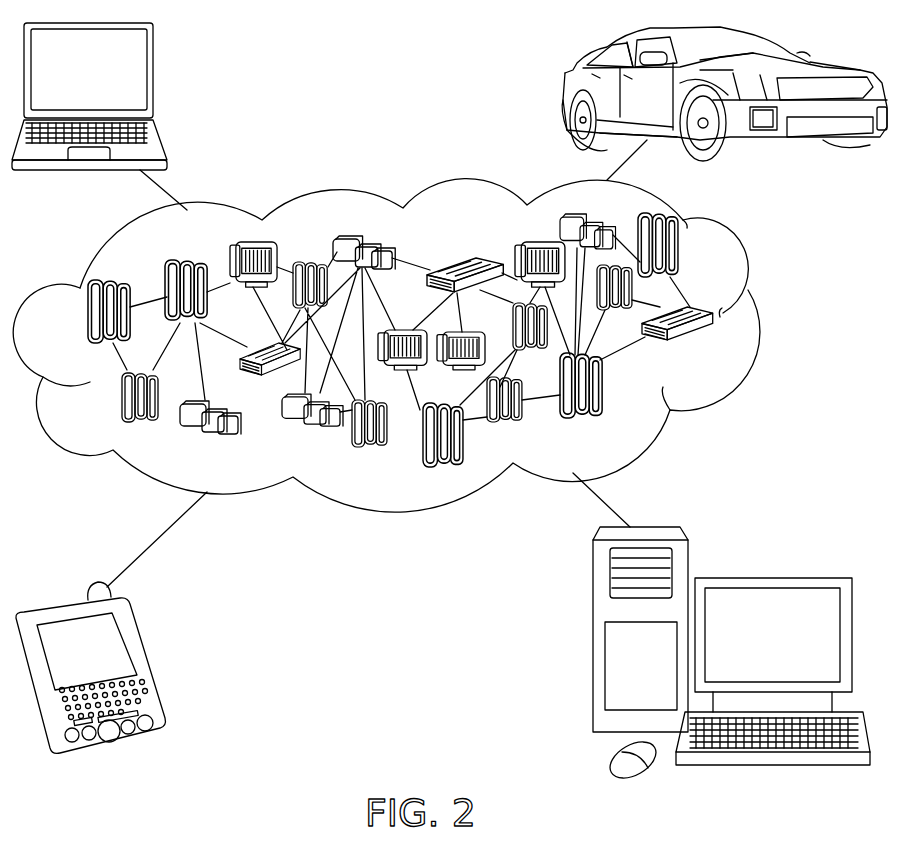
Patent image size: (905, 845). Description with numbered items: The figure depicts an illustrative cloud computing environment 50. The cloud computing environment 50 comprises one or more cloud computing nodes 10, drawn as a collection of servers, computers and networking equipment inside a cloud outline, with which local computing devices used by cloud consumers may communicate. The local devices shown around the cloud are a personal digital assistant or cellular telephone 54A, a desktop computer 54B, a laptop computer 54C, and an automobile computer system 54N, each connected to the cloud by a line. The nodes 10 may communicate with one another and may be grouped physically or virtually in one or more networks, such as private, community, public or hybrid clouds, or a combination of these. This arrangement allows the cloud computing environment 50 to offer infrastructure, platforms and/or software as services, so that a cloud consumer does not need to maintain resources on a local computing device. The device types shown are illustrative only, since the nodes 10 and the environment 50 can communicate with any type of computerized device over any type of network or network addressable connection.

The cloud computing node 10 is at (722, 350).
The cloud computing environment 50 is at (773, 320).
The personal digital assistant or cellular telephone 54A is at (150, 660).
The desktop computer 54B is at (770, 578).
The laptop computer 54C is at (157, 78).
The automobile computer system 54N is at (565, 92).